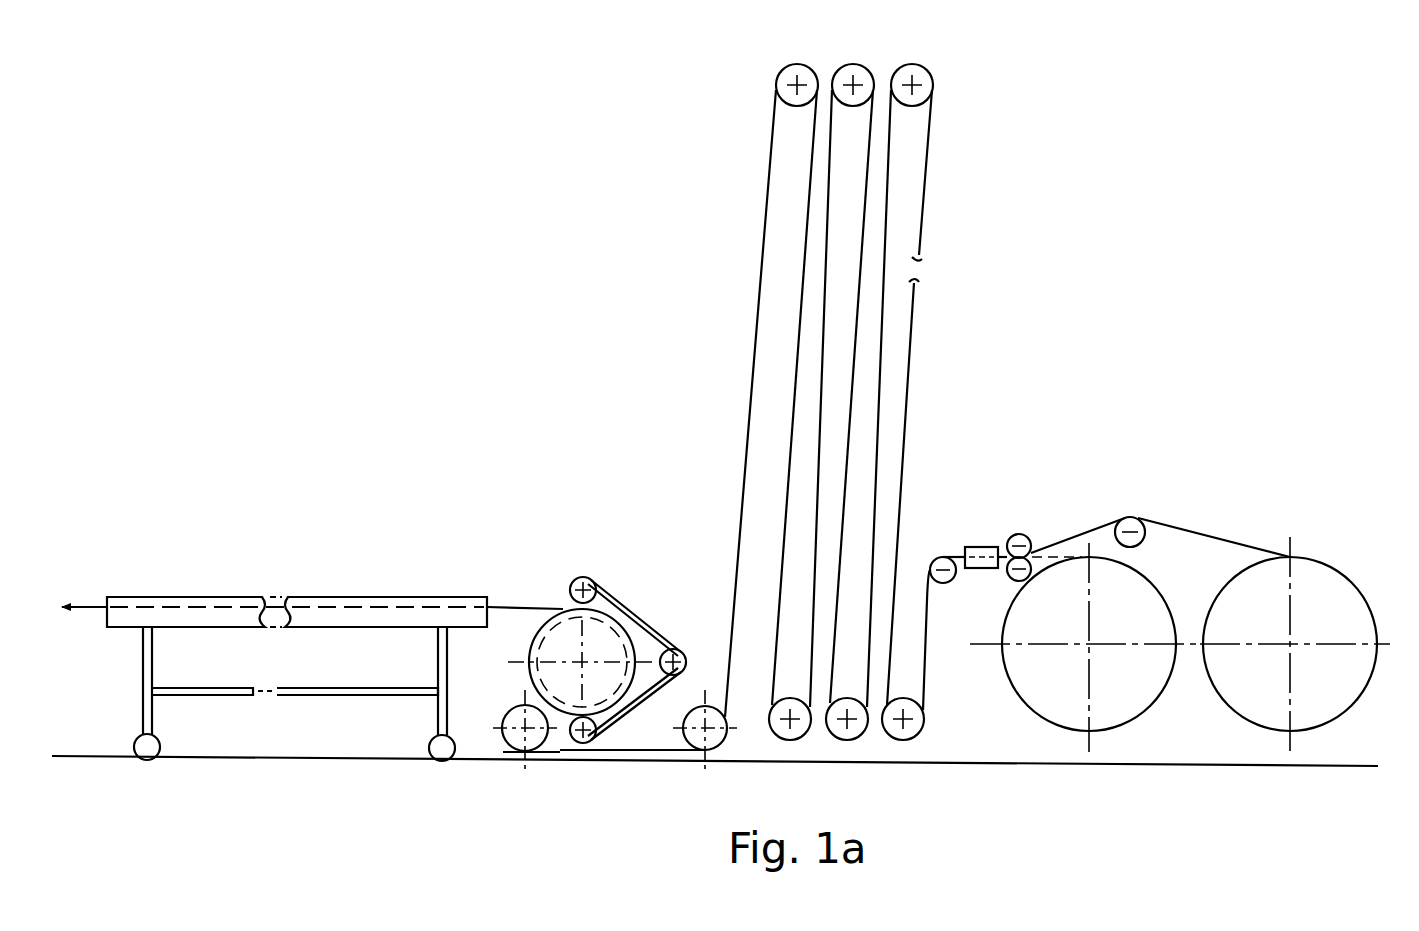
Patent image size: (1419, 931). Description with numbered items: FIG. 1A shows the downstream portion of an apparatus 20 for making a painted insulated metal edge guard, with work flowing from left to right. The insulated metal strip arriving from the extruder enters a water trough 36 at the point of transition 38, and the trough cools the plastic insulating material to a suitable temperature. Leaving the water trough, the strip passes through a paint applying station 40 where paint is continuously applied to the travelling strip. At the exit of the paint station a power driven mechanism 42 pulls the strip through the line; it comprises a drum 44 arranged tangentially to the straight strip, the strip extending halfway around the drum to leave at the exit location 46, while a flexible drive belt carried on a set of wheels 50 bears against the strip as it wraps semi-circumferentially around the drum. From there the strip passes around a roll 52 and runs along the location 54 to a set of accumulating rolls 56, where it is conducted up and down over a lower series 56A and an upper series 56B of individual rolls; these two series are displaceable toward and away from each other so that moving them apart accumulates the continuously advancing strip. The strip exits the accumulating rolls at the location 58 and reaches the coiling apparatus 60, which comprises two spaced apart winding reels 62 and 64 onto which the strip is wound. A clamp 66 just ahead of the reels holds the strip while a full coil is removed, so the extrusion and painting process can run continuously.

The apparatus 20 is at (388, 246).
The water trough 36 is at (313, 598).
The point of transition 38 is at (85, 605).
The paint applying station 40 is at (505, 608).
The power driven mechanism 42 is at (648, 598).
The drum 44 is at (564, 610).
The exit location 46 is at (548, 709).
The set of wheels 50 is at (586, 578).
The roll 52 is at (500, 743).
The location 54 is at (623, 758).
The set of accumulating rolls 56 is at (895, 412).
The lower series 56A is at (924, 740).
The upper series 56B is at (968, 87).
The exit location 58 is at (925, 598).
The coiling apparatus 60 is at (1099, 510).
The winding reel 62 is at (1057, 724).
The winding reel 64 is at (1240, 717).
The clamp 66 is at (985, 547).